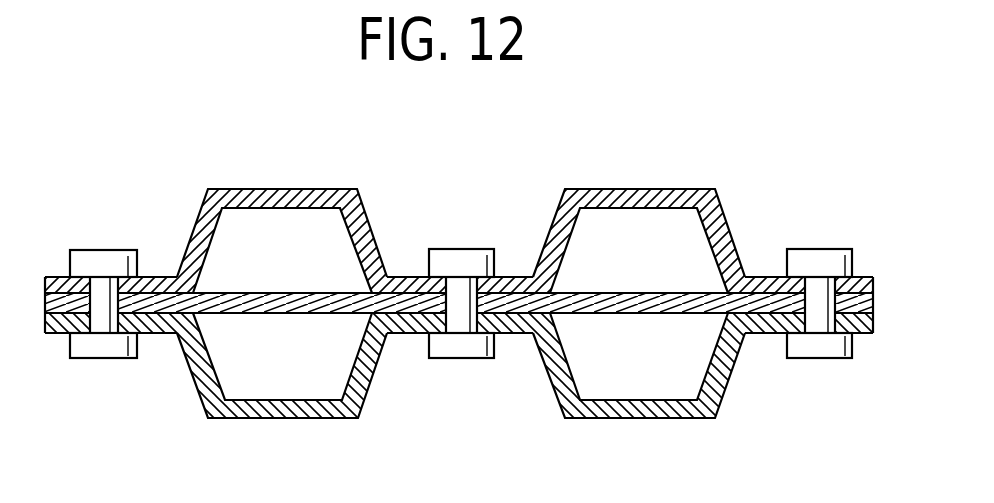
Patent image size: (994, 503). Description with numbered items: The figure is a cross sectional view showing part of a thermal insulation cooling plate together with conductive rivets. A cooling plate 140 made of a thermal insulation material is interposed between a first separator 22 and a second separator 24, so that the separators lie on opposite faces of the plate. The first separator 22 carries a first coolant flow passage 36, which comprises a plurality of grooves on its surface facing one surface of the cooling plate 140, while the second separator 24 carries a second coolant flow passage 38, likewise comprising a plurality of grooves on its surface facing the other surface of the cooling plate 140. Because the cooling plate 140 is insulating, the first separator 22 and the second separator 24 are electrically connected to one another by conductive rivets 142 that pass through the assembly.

The first separator 22 is at (288, 418).
The second separator 24 is at (280, 189).
The first coolant flow passage 36 is at (460, 356).
The second coolant flow passage 38 is at (460, 250).
The cooling plate 140 is at (672, 314).
The conductive rivets 142 is at (455, 345).